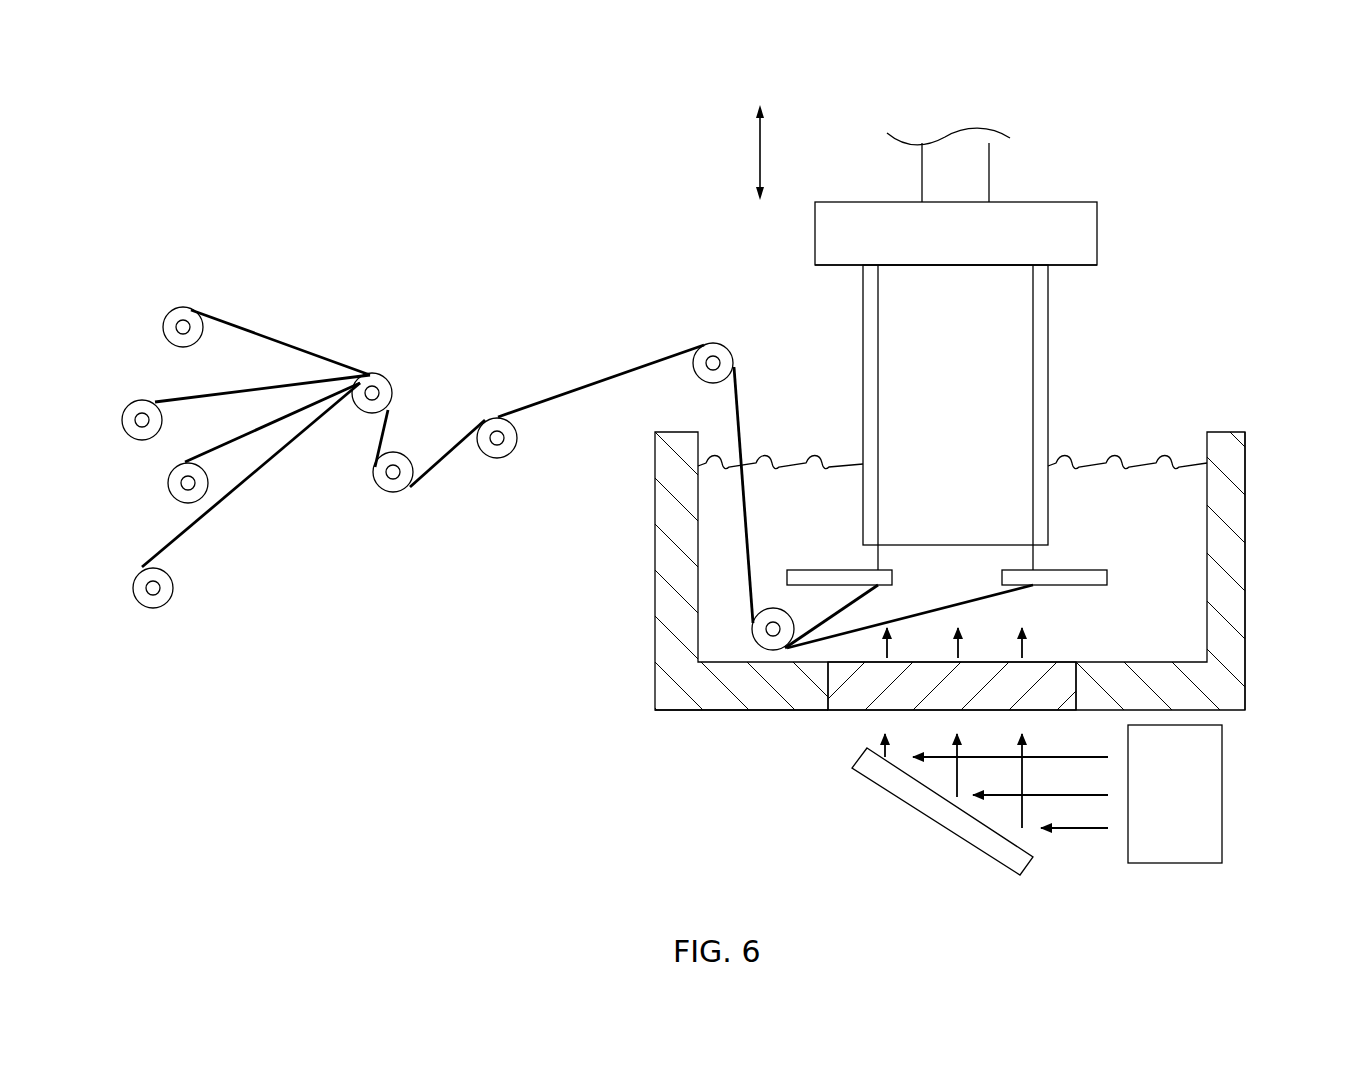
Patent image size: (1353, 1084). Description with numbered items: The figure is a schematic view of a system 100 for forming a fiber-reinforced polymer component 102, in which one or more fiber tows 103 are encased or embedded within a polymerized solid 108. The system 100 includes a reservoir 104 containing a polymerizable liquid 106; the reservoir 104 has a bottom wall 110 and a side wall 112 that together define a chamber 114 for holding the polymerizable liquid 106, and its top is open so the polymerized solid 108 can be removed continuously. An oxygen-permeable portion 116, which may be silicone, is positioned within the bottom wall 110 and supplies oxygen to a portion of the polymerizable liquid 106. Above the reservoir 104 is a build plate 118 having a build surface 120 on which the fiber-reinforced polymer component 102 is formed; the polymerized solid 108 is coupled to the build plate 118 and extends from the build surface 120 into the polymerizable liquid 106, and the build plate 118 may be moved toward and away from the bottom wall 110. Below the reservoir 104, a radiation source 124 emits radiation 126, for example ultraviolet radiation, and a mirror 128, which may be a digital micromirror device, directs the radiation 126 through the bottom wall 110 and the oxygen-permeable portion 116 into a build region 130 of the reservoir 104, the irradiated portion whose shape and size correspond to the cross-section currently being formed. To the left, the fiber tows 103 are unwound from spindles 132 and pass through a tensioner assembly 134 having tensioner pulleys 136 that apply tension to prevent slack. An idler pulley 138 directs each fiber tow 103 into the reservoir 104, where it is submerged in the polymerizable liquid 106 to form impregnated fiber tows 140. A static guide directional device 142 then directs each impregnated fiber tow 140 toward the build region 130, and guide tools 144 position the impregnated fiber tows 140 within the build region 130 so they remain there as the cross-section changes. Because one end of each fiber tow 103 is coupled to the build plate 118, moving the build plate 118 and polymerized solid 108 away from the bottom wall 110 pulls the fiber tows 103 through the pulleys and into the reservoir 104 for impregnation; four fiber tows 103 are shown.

The system 100 is at (188, 124).
The fiber-reinforced polymer component 102 is at (1125, 405).
The fiber tows 103 is at (233, 385).
The reservoir 104 is at (637, 608).
The polymerizable liquid 106 is at (1170, 587).
The polymerized solid 108 is at (1048, 335).
The bottom wall 110 is at (697, 712).
The side wall 112 is at (1245, 517).
The chamber 114 is at (1165, 442).
The oxygen-permeable portion 116 is at (847, 712).
The build plate 118 is at (1097, 233).
The build surface 120 is at (1068, 265).
The radiation source 124 is at (758, 150).
The radiation 126 is at (885, 648).
The mirror 128 is at (940, 822).
The build region 130 is at (968, 555).
The spindles 132 is at (142, 402).
The tensioner assembly 134 is at (460, 380).
The tensioner pulleys 136 is at (375, 378).
The idler pulley 138 is at (722, 350).
The impregnated fiber tows 140 is at (750, 523).
The static guide directional device 142 is at (757, 640).
The guide tools 144 is at (793, 568).